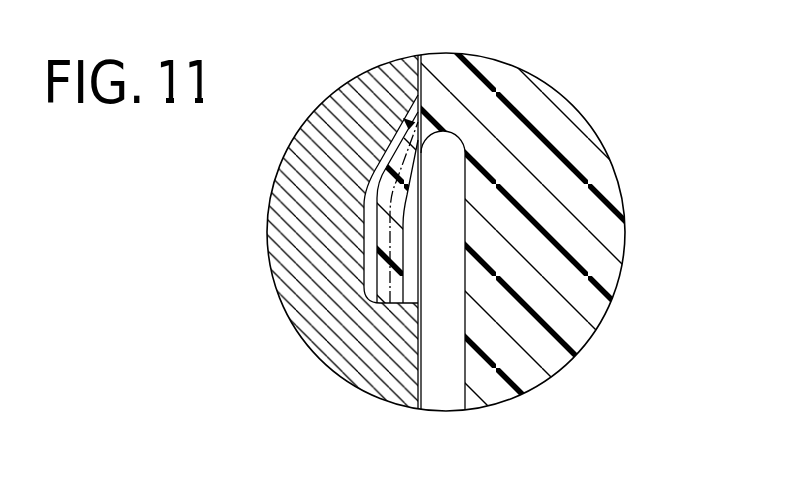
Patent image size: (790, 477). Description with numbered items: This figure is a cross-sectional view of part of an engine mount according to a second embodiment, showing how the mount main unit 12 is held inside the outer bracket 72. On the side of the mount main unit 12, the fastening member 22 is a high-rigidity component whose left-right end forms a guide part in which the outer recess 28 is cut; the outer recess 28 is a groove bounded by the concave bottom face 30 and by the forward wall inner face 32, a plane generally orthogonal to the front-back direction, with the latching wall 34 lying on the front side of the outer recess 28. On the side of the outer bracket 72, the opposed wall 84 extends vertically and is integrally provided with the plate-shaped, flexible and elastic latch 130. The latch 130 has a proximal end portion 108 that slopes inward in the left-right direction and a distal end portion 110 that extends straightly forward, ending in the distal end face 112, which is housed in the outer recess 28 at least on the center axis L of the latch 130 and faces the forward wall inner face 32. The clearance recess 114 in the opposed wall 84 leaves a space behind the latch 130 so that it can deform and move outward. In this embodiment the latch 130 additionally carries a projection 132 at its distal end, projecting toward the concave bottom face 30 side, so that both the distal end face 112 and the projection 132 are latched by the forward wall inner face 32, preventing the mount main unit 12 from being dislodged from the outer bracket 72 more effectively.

The mount main unit 12 is at (428, 381).
The fastening member 22 is at (305, 176).
The outer recess 28 is at (406, 121).
The concave bottom face 30 is at (374, 180).
The forward wall inner face 32 is at (418, 298).
The latching wall 34 is at (400, 360).
The outer bracket 72 is at (412, 69).
The opposed wall 84 is at (540, 355).
The proximal end portion 108 is at (404, 176).
The distal end portion 110 is at (397, 258).
The distal end face 112 is at (384, 309).
The clearance recess 114 is at (462, 192).
The latch 130 is at (554, 209).
The projection 132 is at (376, 302).
The center axis L is at (390, 234).